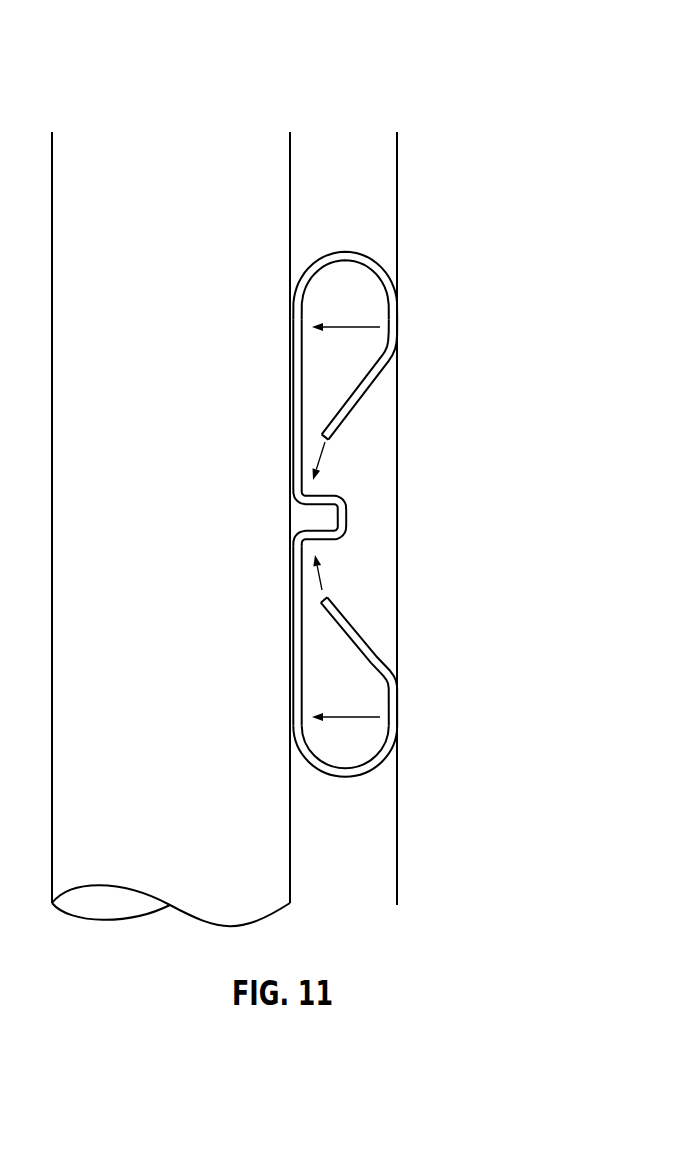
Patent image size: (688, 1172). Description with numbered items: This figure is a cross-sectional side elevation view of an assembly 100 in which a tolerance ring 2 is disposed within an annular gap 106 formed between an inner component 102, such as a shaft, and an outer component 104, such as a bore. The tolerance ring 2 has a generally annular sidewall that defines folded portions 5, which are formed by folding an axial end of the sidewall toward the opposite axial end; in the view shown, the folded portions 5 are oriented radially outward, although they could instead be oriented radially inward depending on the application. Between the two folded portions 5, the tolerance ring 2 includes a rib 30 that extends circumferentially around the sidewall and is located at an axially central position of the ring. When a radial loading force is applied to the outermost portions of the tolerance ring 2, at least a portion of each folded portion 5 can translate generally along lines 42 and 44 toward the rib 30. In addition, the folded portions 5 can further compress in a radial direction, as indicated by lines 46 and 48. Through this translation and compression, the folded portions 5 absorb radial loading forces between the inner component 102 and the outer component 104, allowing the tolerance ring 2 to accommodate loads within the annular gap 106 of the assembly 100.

The assembly 100 is at (506, 43).
The inner component 102 is at (188, 477).
The outer component 104 is at (476, 477).
The annular gap 106 is at (365, 193).
The tolerance ring 2 is at (349, 253).
The folded portion 5 is at (316, 268).
The rib 30 is at (350, 513).
The line 42 is at (320, 456).
The line 44 is at (320, 578).
The line 46 is at (338, 326).
The line 48 is at (338, 718).